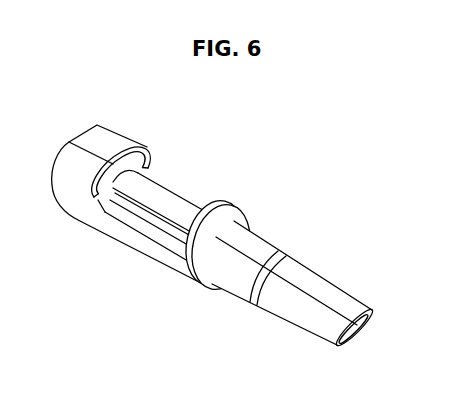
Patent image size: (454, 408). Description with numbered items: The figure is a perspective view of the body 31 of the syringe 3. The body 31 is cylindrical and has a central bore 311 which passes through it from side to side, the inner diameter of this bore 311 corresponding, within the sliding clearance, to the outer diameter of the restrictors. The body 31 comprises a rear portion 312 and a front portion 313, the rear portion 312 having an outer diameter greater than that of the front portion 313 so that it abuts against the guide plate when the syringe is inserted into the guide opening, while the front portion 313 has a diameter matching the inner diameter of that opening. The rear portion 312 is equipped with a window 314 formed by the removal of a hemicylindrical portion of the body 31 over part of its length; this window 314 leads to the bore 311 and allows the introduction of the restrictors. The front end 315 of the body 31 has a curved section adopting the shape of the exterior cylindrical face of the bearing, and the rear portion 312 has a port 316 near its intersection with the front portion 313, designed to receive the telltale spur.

The syringe 3 is at (236, 237).
The body 31 is at (126, 127).
The central bore 311 is at (359, 327).
The rear portion 312 is at (135, 197).
The front portion 313 is at (307, 291).
The window 314 is at (182, 185).
The front end 315 is at (371, 349).
The port 316 is at (220, 285).